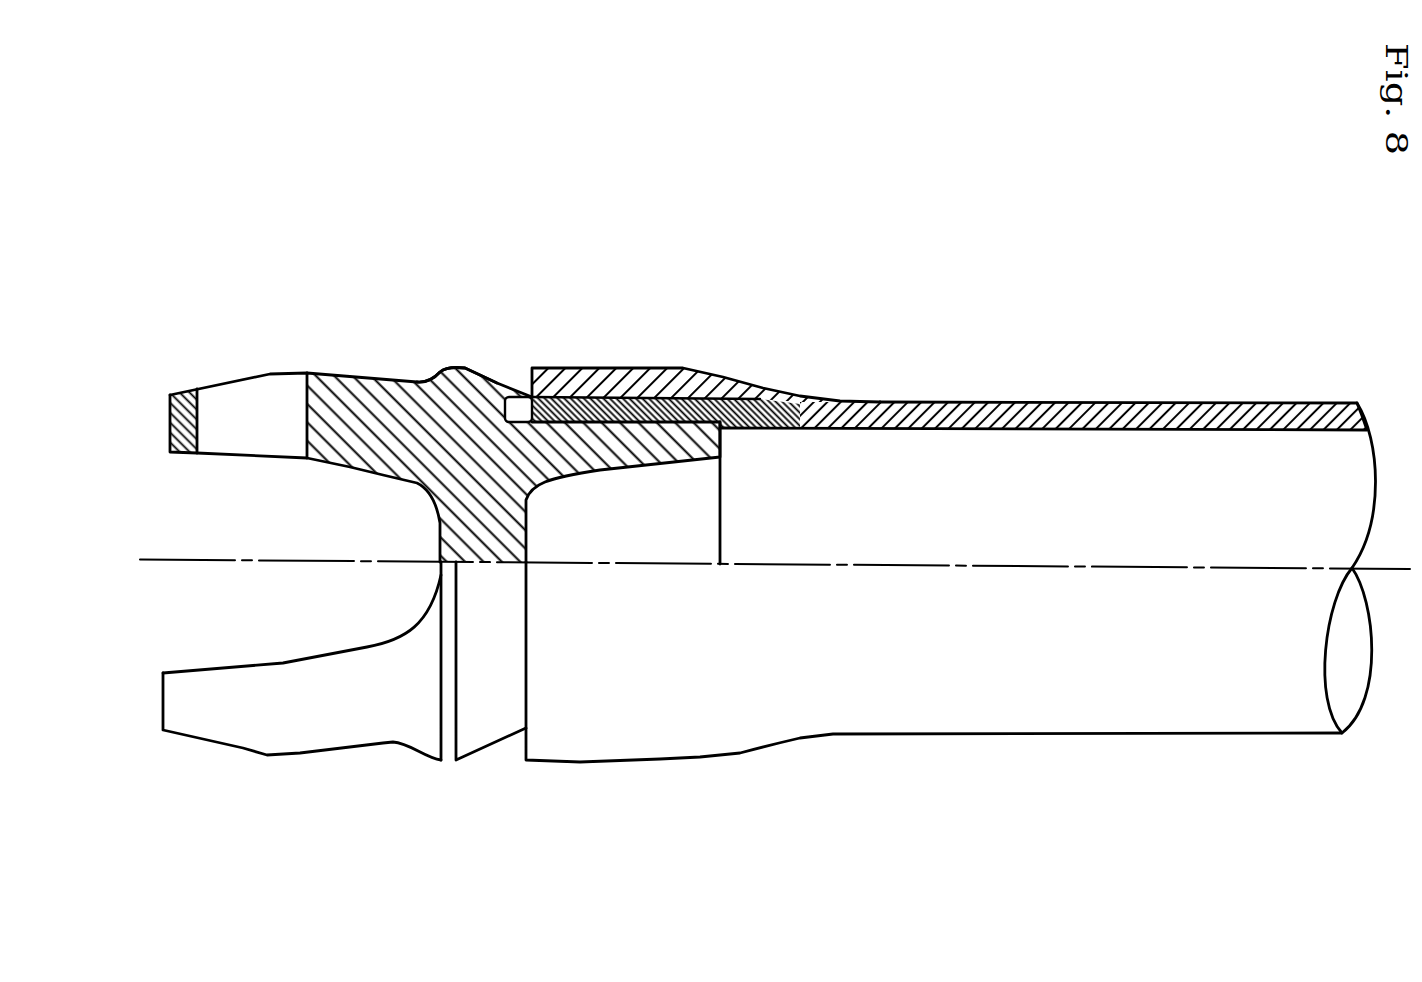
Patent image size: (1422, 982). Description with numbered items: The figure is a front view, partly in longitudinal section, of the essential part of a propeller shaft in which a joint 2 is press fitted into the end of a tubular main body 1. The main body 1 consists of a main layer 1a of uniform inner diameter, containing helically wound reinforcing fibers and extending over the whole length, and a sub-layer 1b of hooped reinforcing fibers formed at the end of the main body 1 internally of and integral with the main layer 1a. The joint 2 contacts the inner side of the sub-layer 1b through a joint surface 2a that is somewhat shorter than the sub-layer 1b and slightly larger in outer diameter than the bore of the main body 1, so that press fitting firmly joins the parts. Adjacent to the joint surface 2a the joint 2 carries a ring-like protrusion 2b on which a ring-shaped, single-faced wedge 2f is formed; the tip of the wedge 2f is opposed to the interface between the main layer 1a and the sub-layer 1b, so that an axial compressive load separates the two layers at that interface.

The main body 1 is at (1075, 768).
The main layer 1a is at (1045, 403).
The sub-layer 1b is at (608, 387).
The joint 2 is at (283, 789).
The joint surface 2a is at (688, 377).
The ring-like protrusion 2b is at (462, 370).
The wedge 2f is at (518, 390).